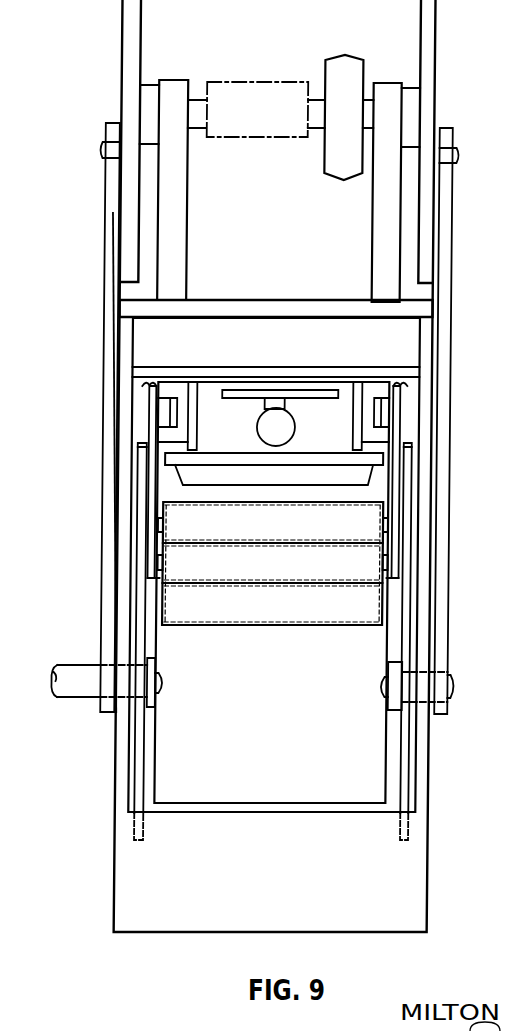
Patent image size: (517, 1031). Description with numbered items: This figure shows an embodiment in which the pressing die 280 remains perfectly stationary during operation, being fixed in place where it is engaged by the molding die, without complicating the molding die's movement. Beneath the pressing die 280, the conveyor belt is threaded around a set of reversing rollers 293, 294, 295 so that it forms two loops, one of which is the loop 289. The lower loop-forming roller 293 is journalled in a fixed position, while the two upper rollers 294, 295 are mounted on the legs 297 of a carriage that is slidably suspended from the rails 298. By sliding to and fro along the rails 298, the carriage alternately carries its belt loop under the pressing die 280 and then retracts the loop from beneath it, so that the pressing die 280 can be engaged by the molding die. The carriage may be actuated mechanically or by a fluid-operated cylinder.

The pressing die 280 is at (254, 486).
The loop 289 is at (328, 572).
The lower loop-forming roller 293 is at (373, 608).
The upper roller 294 is at (373, 567).
The upper roller 295 is at (373, 522).
The legs 297 is at (161, 488).
The rails 298 is at (157, 385).